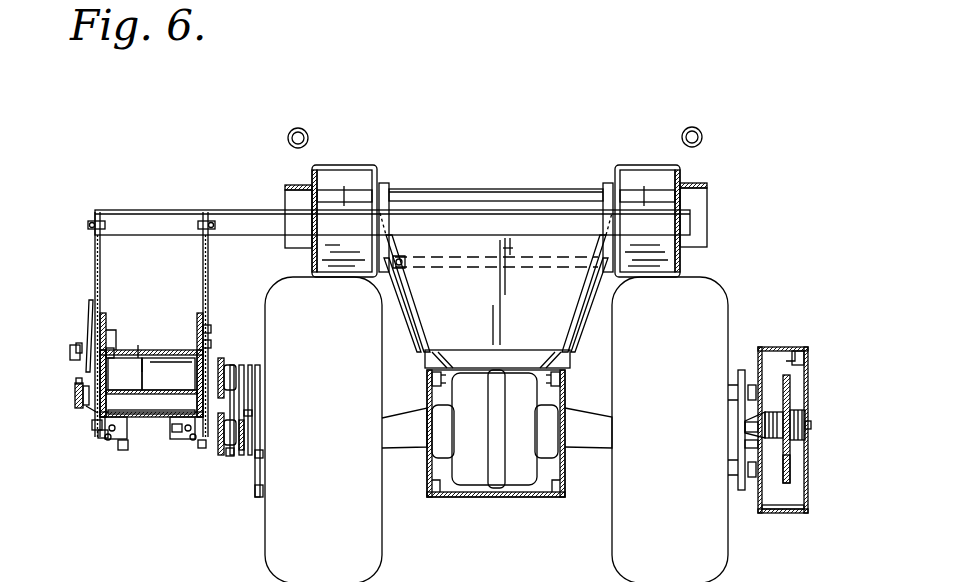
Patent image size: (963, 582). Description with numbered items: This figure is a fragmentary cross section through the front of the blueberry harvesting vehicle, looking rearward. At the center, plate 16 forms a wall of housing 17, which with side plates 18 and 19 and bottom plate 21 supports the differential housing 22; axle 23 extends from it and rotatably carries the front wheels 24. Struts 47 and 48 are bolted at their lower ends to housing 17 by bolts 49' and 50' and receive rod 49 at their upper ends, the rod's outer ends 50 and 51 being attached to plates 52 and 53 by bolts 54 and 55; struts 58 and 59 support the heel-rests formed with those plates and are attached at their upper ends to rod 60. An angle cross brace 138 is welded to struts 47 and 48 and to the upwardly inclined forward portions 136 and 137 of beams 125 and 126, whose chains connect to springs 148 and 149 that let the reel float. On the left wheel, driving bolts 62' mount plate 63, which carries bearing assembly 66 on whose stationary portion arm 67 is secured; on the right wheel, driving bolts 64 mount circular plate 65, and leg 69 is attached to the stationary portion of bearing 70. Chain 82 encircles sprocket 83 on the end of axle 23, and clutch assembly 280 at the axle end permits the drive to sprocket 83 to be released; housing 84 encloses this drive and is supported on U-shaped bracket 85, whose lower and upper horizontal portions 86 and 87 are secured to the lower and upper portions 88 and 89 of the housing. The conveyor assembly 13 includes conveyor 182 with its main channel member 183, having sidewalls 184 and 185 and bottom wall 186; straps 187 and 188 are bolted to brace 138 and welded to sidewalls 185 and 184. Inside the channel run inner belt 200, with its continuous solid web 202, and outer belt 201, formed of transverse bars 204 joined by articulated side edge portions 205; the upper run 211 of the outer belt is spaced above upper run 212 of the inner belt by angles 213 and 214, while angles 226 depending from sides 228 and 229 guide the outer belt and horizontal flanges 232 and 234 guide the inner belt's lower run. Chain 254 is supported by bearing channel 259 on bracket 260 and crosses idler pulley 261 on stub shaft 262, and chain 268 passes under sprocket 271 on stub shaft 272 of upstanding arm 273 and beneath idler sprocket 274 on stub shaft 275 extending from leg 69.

The conveyor assembly 13 is at (100, 446).
The plate 16 is at (473, 368).
The housing 17 is at (440, 498).
The side plate 18 is at (565, 463).
The side plate 19 is at (427, 463).
The bottom plate 21 is at (537, 498).
The differential housing 22 is at (473, 486).
The axle 23 is at (610, 425).
The front wheels 24 is at (266, 560).
The strut 47 is at (413, 284).
The strut 48 is at (585, 280).
The rod 49 is at (496, 179).
The bolt 49' is at (414, 382).
The outer end of rod 50 is at (344, 206).
The bolt 50' is at (576, 380).
The outer end of rod 51 is at (660, 190).
The plate 52 is at (366, 166).
The plate 53 is at (632, 166).
The bolt 54 is at (344, 199).
The bolt 55 is at (644, 199).
The strut 58 is at (417, 300).
The strut 59 is at (580, 296).
The rod 60 is at (405, 258).
The wheel driving bolts 62' is at (741, 433).
The plate 63 is at (738, 375).
The wheel driving bolts 64 is at (258, 372).
The circular plate 65 is at (263, 490).
The bearing assembly 66 is at (742, 430).
The arm 67 is at (745, 447).
The leg 69 is at (263, 455).
The bearing 70 is at (248, 431).
The chain 82 is at (790, 381).
The sprocket 83 is at (790, 472).
The housing 84 is at (807, 492).
The U-shaped bracket 85 is at (775, 347).
The lower horizontal portion 86 is at (802, 508).
The upper horizontal portion 87 is at (804, 360).
The lower horizontal portion of housing 88 is at (795, 513).
The upper horizontal portion of housing 89 is at (795, 345).
The beam 125 is at (708, 184).
The beam 126 is at (283, 186).
The upwardly inclined forward portion 136 is at (708, 190).
The upwardly inclined forward portion 137 is at (290, 184).
The angle cross brace 138 is at (262, 210).
The spring 148 is at (692, 127).
The spring 149 is at (298, 128).
The conveyor 182 is at (112, 333).
The main channel member 183 is at (120, 440).
The sidewall 184 is at (198, 320).
The sidewall 185 is at (104, 318).
The bottom wall 186 is at (151, 421).
The strap 187 is at (100, 250).
The strap 188 is at (204, 250).
The inner belt 200 is at (143, 360).
The outer belt 201 is at (175, 362).
The continuous solid web 202 is at (175, 385).
The transverse bars 204 is at (176, 440).
The articulated side edge portions 205 is at (211, 329).
The upper run of outer belt 211 is at (138, 345).
The upper run of inner belt 212 is at (125, 374).
The angle 213 is at (110, 352).
The angle 214 is at (211, 344).
The angles 226 is at (107, 440).
The side 228 is at (97, 425).
The side 229 is at (202, 448).
The horizontal flange 232 is at (123, 450).
The horizontal flange 234 is at (176, 433).
The chain 254 is at (79, 343).
The bearing channel 259 is at (70, 354).
The bracket 260 is at (89, 305).
The idler pulley 261 is at (74, 395).
The stub shaft 262 is at (90, 410).
The chain 268 is at (230, 456).
The sprocket 271 is at (228, 358).
The stub shaft 272 is at (240, 364).
The upstanding arm 273 is at (250, 370).
The idler sprocket 274 is at (220, 458).
The stub shaft 275 is at (252, 414).
The clutch assembly 280 is at (812, 422).